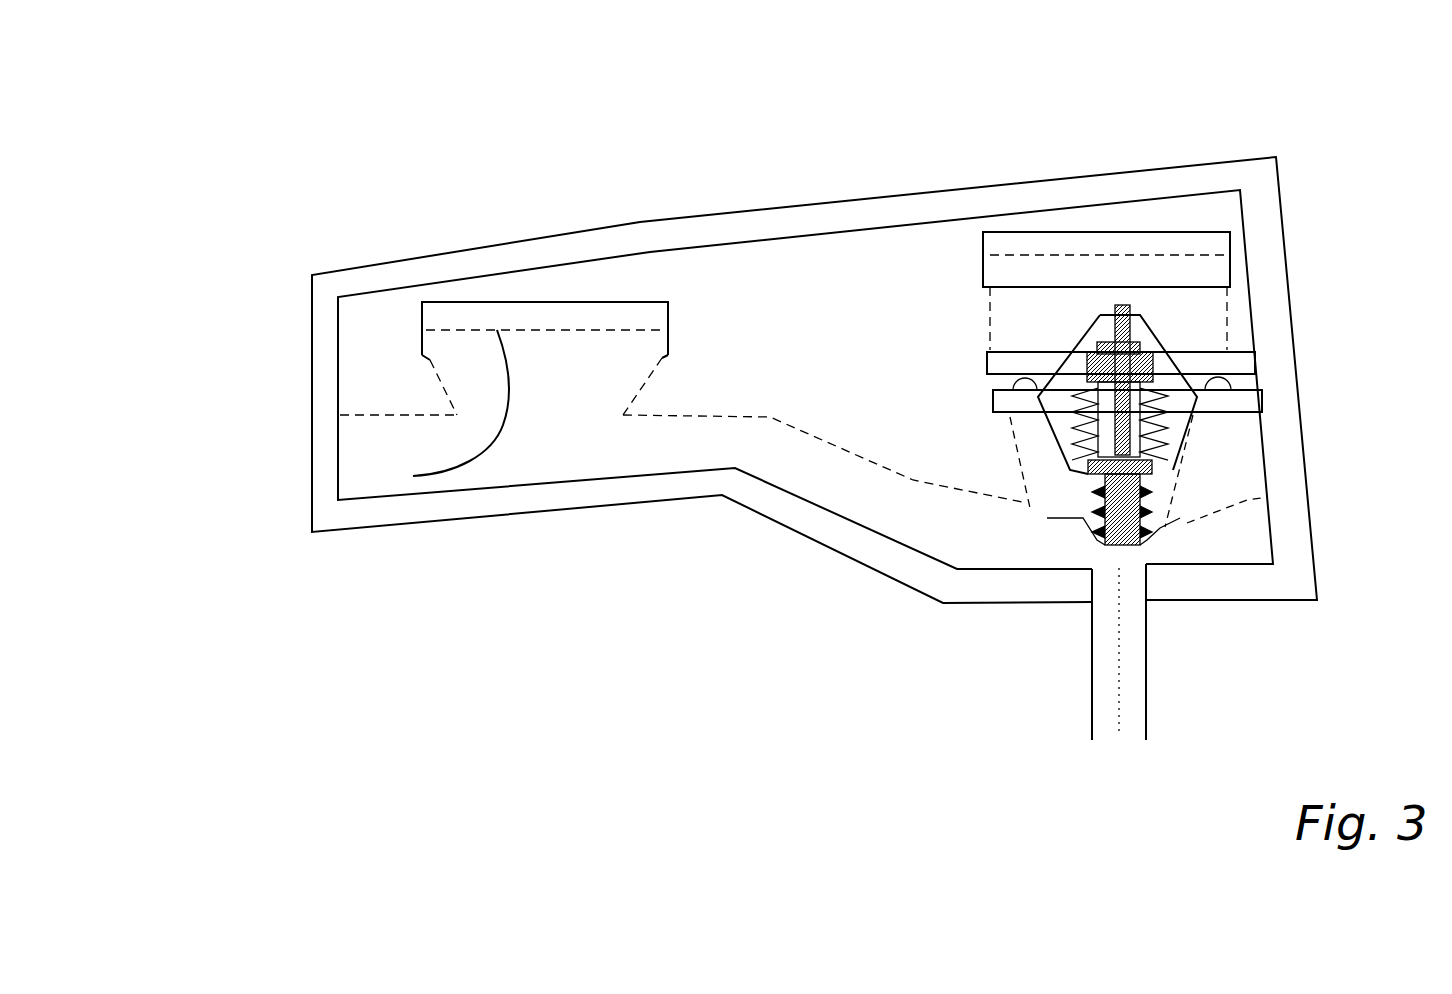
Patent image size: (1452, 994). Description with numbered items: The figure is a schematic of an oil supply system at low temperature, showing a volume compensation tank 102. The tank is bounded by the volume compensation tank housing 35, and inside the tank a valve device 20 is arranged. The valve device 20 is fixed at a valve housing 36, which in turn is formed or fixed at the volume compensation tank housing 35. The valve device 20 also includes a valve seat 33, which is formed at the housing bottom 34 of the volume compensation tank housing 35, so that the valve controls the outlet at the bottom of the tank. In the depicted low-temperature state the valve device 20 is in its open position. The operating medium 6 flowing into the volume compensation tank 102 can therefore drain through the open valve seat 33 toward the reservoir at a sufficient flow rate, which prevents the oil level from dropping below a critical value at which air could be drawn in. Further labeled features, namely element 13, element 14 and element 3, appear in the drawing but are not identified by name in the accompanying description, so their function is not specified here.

The volume compensation tank 102 is at (336, 234).
The volume compensation tank housing 35 is at (297, 327).
The inlet connection 13 is at (562, 303).
The operating medium 6 is at (413, 476).
The inlet connection 14 is at (1125, 232).
The valve housing 36 is at (975, 386).
The valve device 20 is at (1186, 318).
The housing bottom 34 is at (1200, 582).
The valve seat 33 is at (1073, 569).
The outlet channel 3 is at (1148, 665).